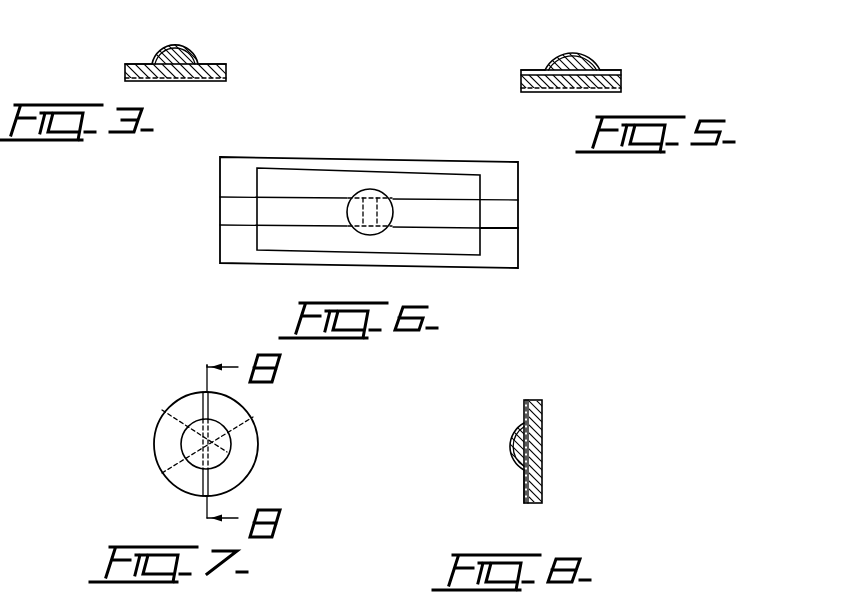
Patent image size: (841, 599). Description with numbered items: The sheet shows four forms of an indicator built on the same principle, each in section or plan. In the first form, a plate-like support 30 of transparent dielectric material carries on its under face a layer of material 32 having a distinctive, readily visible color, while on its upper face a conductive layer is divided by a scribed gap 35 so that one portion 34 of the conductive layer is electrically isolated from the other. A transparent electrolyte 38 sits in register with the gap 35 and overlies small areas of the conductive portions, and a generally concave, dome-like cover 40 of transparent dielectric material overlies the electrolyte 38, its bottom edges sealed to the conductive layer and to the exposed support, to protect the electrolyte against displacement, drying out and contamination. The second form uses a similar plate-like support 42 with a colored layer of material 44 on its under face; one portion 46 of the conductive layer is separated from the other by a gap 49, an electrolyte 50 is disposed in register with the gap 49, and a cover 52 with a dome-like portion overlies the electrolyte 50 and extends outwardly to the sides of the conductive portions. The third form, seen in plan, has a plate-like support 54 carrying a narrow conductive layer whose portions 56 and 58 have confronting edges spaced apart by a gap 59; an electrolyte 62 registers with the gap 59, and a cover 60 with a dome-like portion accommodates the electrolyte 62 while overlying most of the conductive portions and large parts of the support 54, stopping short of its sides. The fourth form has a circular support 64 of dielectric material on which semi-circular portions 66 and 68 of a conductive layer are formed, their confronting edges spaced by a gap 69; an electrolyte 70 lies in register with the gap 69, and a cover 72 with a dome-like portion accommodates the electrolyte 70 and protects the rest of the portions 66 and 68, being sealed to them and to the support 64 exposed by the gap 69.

In FIG. 3, the plate-like support 30 is at (228, 72).
In FIG. 3, the layer of material 32 is at (198, 83).
In FIG. 3, the portion of conductive layer 34 is at (214, 63).
In FIG. 3, the gap 35 is at (139, 63).
In FIG. 3, the electrolyte 38 is at (188, 51).
In FIG. 3, the dome-like cover 40 is at (166, 48).
In FIG. 5, the plate-like support 42 is at (520, 80).
In FIG. 5, the layer of material 44 is at (550, 93).
In FIG. 5, the portion of conductive layer 46 is at (623, 78).
In FIG. 5, the gap 49 is at (528, 70).
In FIG. 5, the electrolyte 50 is at (580, 55).
In FIG. 5, the cover 52 is at (543, 68).
In FIG. 6, the plate-like support 54 is at (288, 165).
In FIG. 6, the portion of narrow conductive layer 56 is at (220, 210).
In FIG. 6, the portion of narrow conductive layer 58 is at (507, 210).
In FIG. 6, the gap 59 is at (388, 198).
In FIG. 6, the cover 60 is at (450, 181).
In FIG. 6, the electrolyte 62 is at (353, 199).
In FIG. 8, the circular support 64 is at (542, 424).
In FIG. 7, the portion of conductive layer 66 is at (202, 472).
In FIG. 8, the portion of conductive layer 66 is at (530, 400).
In FIG. 7, the portion of conductive layer 68 is at (210, 414).
In FIG. 7, the gap 69 is at (202, 405).
In FIG. 8, the gap 69 is at (527, 498).
In FIG. 8, the electrolyte 70 is at (517, 448).
In FIG. 7, the cover 72 is at (241, 467).
In FIG. 8, the cover 72 is at (525, 487).